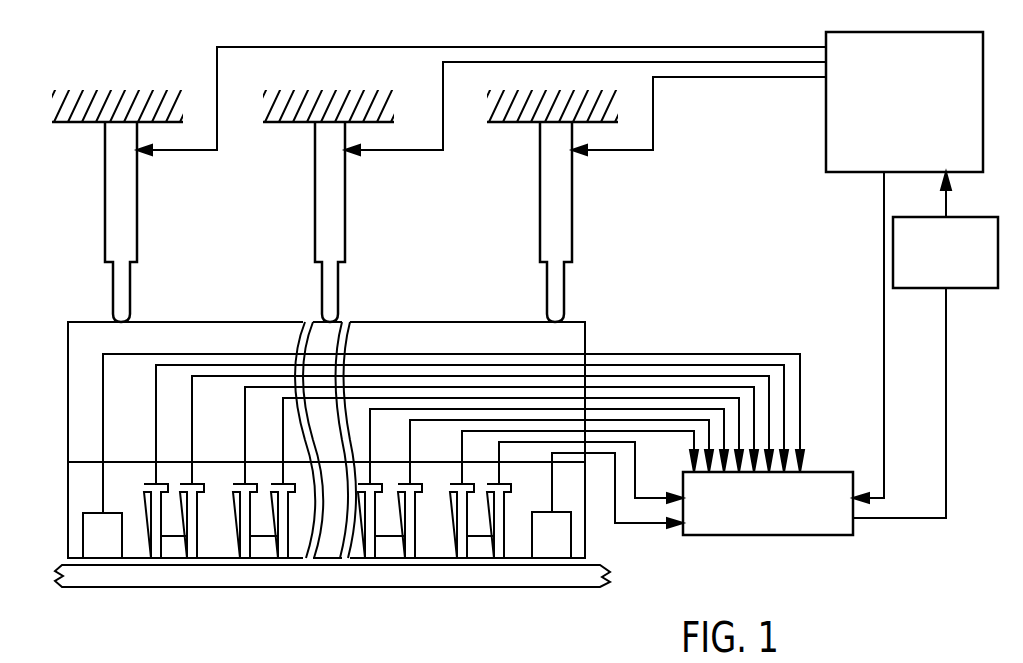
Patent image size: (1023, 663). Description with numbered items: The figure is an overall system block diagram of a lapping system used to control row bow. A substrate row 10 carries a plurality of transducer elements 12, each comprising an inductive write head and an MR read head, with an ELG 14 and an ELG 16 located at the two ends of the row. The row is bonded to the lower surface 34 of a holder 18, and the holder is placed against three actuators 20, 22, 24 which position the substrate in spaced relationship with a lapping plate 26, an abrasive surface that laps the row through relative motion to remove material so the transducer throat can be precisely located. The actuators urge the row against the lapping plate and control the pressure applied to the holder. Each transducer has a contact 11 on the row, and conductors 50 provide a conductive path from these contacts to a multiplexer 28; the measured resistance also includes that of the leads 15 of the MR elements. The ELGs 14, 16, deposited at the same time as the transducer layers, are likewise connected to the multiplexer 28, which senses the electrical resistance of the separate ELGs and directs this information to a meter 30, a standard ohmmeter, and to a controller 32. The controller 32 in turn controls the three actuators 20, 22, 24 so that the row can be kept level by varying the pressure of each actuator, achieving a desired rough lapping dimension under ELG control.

The substrate row 10 is at (412, 442).
The contact 11 is at (160, 485).
The transducer elements 12 is at (393, 548).
The ELG 14 is at (83, 545).
The leads 15 is at (194, 524).
The ELG 16 is at (571, 545).
The holder 18 is at (80, 388).
The actuator 20 is at (128, 228).
The actuator 22 is at (340, 228).
The actuator 24 is at (566, 228).
The lapping plate 26 is at (177, 585).
The multiplexer 28 is at (840, 528).
The meter 30 is at (980, 222).
The controller 32 is at (834, 150).
The lower surface 34 is at (80, 462).
The conductors 50 is at (192, 393).